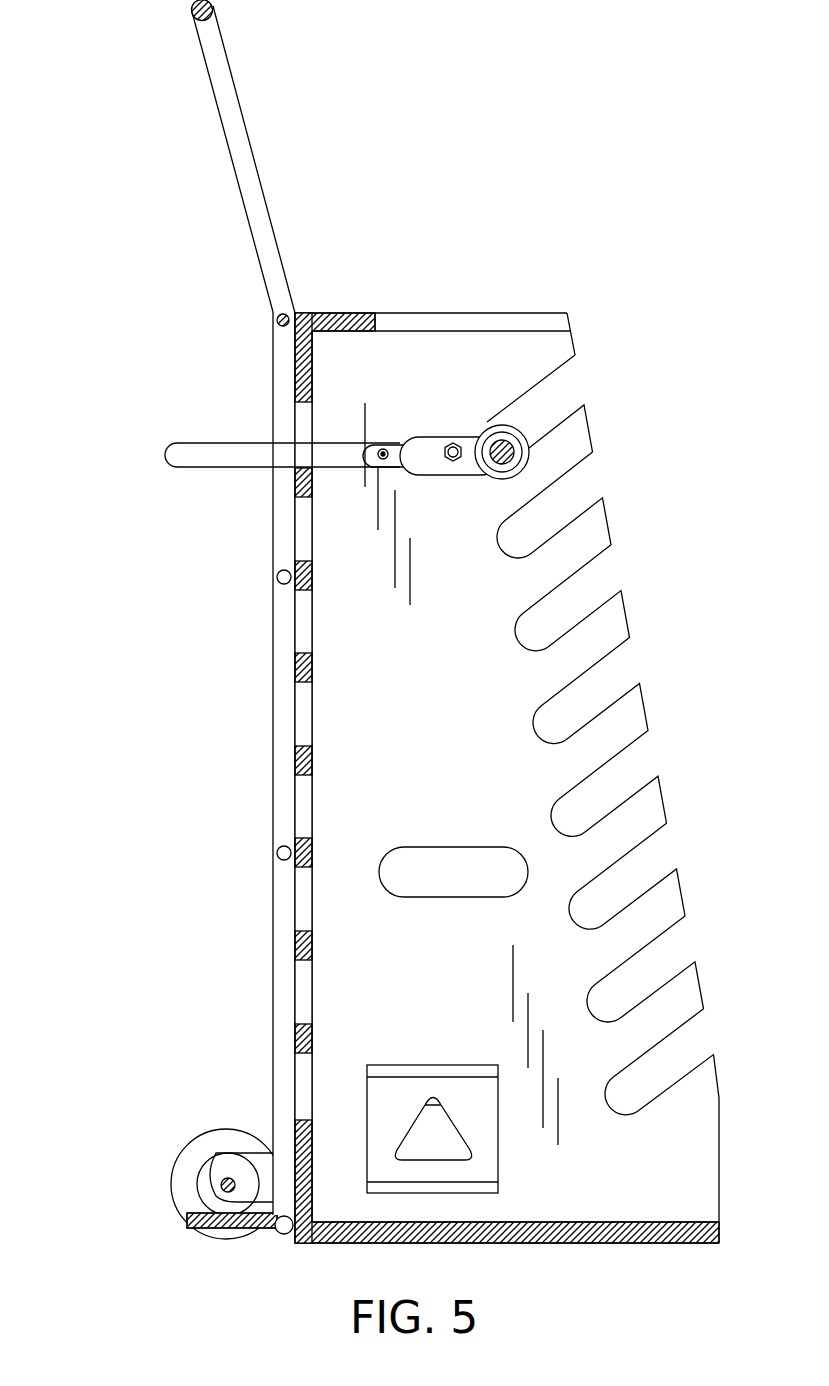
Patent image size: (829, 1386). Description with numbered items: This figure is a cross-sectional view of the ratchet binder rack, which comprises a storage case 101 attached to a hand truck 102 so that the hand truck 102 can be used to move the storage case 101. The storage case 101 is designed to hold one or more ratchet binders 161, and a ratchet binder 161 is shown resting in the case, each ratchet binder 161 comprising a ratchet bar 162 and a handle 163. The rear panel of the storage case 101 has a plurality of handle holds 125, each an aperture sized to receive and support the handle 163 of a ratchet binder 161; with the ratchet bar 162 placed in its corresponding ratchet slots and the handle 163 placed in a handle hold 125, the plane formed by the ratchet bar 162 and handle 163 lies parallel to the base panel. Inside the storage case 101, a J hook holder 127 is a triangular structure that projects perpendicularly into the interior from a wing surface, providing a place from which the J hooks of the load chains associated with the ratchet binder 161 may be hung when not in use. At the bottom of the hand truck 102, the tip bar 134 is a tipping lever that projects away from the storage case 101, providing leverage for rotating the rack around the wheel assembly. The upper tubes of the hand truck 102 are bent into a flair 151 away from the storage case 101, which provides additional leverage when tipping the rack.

The storage case 101 is at (478, 350).
The hand truck 102 is at (273, 513).
The handle holds 125 is at (303, 724).
The J hook holder 127 is at (435, 1065).
The tip bar 134 is at (232, 1224).
The flair 151 is at (228, 105).
The ratchet binder 161 is at (428, 442).
The ratchet bar 162 is at (497, 450).
The handle 163 is at (347, 448).